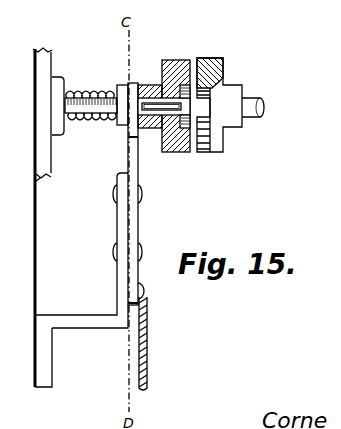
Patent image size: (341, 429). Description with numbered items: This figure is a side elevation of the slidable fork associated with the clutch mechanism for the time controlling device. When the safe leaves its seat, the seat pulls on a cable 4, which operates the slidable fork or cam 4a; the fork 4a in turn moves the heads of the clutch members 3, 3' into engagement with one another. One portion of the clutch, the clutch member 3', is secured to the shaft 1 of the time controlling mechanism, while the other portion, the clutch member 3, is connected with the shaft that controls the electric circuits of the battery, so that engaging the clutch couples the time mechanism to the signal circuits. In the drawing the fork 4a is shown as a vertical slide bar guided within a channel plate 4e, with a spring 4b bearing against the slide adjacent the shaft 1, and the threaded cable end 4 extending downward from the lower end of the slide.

The shaft 1 is at (249, 101).
The clutch member 3 is at (219, 92).
The clutch member 3' is at (164, 92).
The cable 4 is at (144, 365).
The slidable fork 4a is at (134, 82).
The spring 4b is at (106, 91).
The channel plate 4e is at (120, 233).